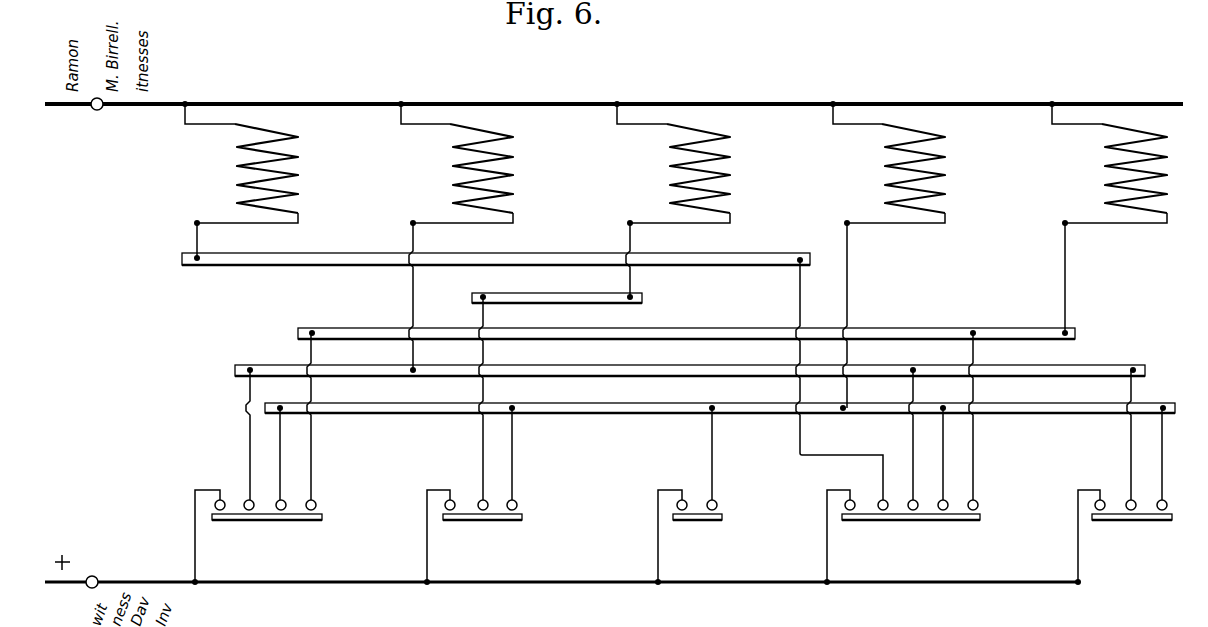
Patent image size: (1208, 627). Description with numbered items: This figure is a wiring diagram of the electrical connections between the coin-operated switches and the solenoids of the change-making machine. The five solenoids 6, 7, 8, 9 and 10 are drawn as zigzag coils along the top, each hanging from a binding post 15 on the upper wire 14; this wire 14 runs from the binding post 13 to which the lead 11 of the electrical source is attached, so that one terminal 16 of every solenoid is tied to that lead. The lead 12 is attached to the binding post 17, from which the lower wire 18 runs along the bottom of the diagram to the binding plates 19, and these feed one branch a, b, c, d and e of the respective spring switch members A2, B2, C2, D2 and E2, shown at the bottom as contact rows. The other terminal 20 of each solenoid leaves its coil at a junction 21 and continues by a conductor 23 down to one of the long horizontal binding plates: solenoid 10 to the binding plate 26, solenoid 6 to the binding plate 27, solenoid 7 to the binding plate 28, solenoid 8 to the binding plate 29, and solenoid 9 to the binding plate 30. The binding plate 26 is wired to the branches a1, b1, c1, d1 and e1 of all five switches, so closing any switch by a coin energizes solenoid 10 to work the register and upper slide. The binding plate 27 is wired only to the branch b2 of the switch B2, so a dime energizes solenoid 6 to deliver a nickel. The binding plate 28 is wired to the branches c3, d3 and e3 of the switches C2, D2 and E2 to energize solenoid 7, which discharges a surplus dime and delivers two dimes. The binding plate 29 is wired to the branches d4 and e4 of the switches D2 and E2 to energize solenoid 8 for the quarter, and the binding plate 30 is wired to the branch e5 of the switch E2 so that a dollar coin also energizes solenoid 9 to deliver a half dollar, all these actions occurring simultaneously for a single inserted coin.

The solenoid 6 is at (730, 157).
The solenoid 7 is at (513, 157).
The solenoid 8 is at (1174, 150).
The solenoid 9 is at (300, 157).
The solenoid 10 is at (945, 157).
The lead 11 is at (62, 108).
The lead 12 is at (81, 575).
The binding post 13 is at (102, 111).
The wire 14 is at (325, 104).
The binding posts 15 is at (186, 104).
The terminal 16 is at (183, 119).
The binding post 17 is at (98, 576).
The wire 18 is at (315, 585).
The binding plates 19 is at (200, 580).
The terminal 20 is at (213, 223).
The junction 21 is at (194, 223).
The conductor 23 is at (196, 240).
The binding plate 26 is at (652, 403).
The binding plate 27 is at (645, 296).
The binding plate 28 is at (661, 361).
The binding plate 29 is at (715, 330).
The binding plate 30 is at (757, 249).
The switch branch a is at (657, 537).
The switch branch a1 is at (710, 451).
The spring switch member A2 is at (718, 521).
The switch branch b is at (426, 515).
The switch branch b1 is at (514, 455).
The switch branch b2 is at (482, 455).
The spring switch member B2 is at (518, 521).
The switch branch c is at (1077, 535).
The switch branch c1 is at (1162, 455).
The switch branch c3 is at (1130, 455).
The spring switch member C2 is at (1160, 522).
The switch branch d is at (193, 503).
The switch branch d1 is at (280, 462).
The switch branch d3 is at (248, 455).
The switch branch d4 is at (312, 445).
The spring switch member D2 is at (313, 521).
The switch branch e is at (826, 536).
The switch branch e1 is at (942, 452).
The switch branch e3 is at (912, 441).
The switch branch e4 is at (973, 450).
The switch branch e5 is at (882, 472).
The spring switch member E2 is at (978, 521).